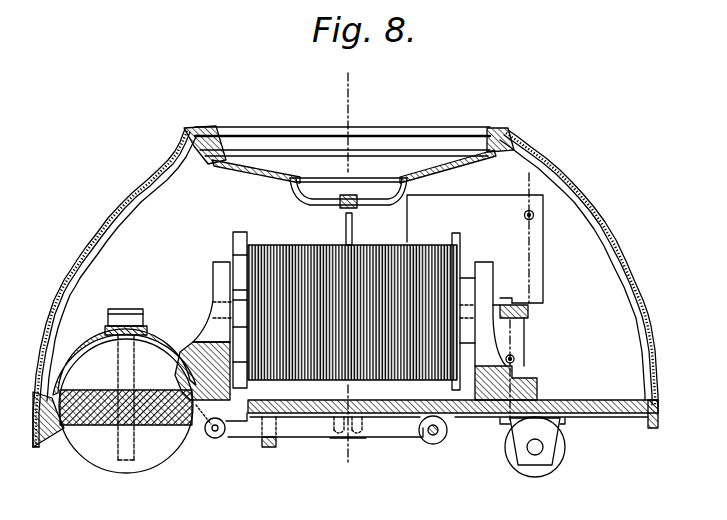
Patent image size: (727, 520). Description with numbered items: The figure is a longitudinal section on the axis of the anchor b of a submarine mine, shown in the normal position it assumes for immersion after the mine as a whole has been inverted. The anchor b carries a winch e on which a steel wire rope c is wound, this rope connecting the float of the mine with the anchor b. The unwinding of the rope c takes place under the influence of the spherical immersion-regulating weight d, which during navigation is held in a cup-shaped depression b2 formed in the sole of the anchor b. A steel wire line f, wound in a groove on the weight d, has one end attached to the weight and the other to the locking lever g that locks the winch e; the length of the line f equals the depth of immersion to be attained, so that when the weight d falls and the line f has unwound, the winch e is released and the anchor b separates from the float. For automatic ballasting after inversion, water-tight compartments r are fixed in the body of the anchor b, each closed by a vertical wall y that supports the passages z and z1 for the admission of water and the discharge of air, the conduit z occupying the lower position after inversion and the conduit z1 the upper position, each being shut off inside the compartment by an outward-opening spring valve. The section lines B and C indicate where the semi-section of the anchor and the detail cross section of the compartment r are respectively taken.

The anchor b is at (607, 228).
The depression b2 is at (193, 415).
The rope c is at (296, 262).
The section line C— C is at (368, 287).
The weight d is at (135, 465).
The winch e is at (458, 248).
The line f is at (90, 418).
The locking lever g is at (245, 425).
The water-tight compartment r is at (605, 288).
The vertical wall y is at (537, 262).
The conduit z is at (513, 357).
The conduit z1 is at (533, 214).
The section line B— B is at (359, 277).